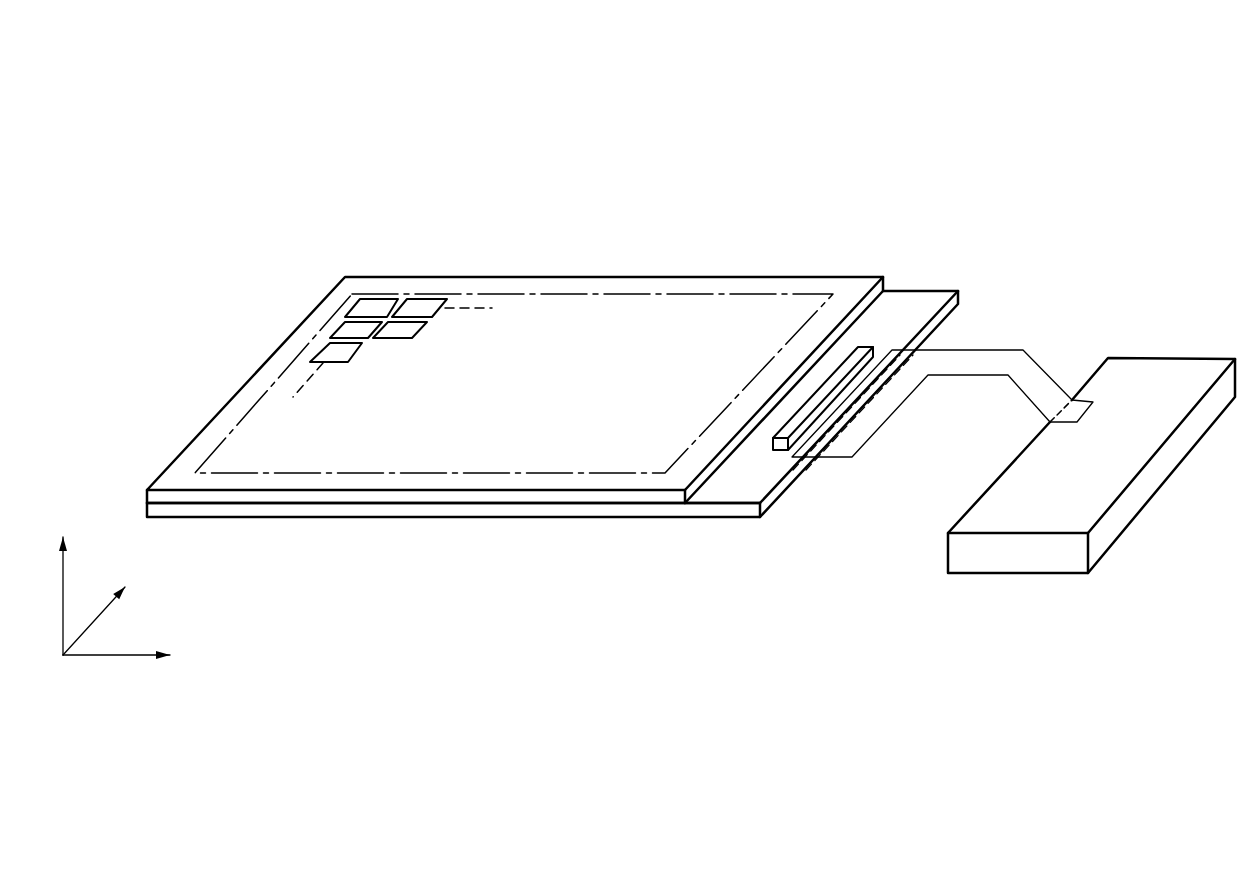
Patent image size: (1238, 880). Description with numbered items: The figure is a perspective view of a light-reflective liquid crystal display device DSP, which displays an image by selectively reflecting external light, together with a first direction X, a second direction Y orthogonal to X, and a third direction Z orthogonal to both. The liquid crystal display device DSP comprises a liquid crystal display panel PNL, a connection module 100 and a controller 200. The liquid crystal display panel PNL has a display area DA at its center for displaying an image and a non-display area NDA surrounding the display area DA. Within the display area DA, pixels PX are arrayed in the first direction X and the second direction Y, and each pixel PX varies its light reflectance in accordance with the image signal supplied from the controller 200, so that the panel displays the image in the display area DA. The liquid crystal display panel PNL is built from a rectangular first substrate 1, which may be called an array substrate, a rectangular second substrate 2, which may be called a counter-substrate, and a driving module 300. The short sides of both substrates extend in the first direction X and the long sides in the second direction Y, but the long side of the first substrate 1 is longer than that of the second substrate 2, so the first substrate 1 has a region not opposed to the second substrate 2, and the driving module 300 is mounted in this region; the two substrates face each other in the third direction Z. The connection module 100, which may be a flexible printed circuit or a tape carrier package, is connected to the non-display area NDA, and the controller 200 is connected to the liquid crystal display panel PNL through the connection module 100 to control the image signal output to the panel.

The liquid crystal display device DSP is at (993, 133).
The liquid crystal display panel PNL is at (797, 528).
The first substrate 1 is at (730, 517).
The second substrate 2 is at (857, 278).
The display area DA is at (527, 305).
The non-display area NDA is at (608, 285).
The pixel PX is at (425, 300).
The driving module 300 is at (870, 347).
The connection module 100 is at (978, 348).
The controller 200 is at (1133, 357).